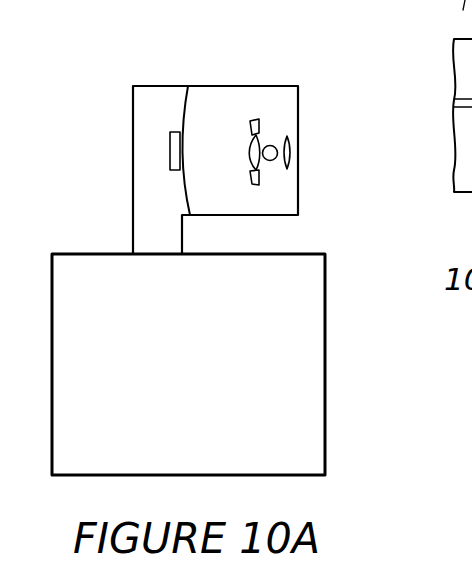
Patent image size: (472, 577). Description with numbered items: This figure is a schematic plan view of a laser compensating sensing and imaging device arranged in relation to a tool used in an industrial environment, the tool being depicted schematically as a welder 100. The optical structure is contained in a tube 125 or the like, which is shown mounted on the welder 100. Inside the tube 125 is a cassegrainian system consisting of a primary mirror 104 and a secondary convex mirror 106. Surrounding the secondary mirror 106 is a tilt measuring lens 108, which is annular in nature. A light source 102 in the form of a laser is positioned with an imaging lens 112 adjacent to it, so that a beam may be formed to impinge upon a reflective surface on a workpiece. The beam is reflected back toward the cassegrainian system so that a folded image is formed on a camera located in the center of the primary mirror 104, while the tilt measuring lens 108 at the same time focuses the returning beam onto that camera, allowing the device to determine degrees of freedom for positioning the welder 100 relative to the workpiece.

The welder 100 is at (307, 372).
The light source 102 is at (268, 142).
The primary mirror 104 is at (167, 108).
The secondary mirror 106 is at (258, 165).
The tilt measuring lens 108 is at (248, 132).
The imaging lens 112 is at (292, 150).
The tube 125 is at (217, 92).